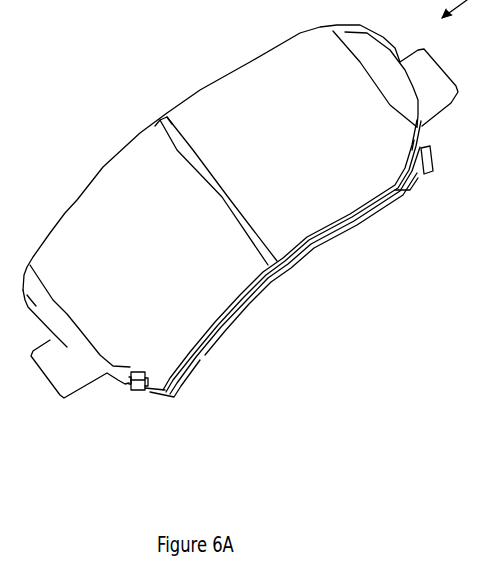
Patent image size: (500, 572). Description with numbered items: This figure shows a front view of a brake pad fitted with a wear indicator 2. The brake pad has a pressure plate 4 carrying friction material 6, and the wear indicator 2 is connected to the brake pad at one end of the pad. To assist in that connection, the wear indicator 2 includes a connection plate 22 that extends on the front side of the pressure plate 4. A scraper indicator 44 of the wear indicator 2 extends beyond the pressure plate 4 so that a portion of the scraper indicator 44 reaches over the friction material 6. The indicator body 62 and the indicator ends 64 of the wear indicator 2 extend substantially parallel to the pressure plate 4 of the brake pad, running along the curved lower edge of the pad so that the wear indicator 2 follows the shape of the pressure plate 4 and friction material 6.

The wear indicator 2 is at (261, 245).
The pressure plate 4 is at (447, 162).
The friction material 6 is at (331, 255).
The connection plate 22 is at (99, 260).
The scraper indicator 44 is at (283, 327).
The indicator body 62 is at (295, 325).
The indicator ends 64 is at (333, 261).